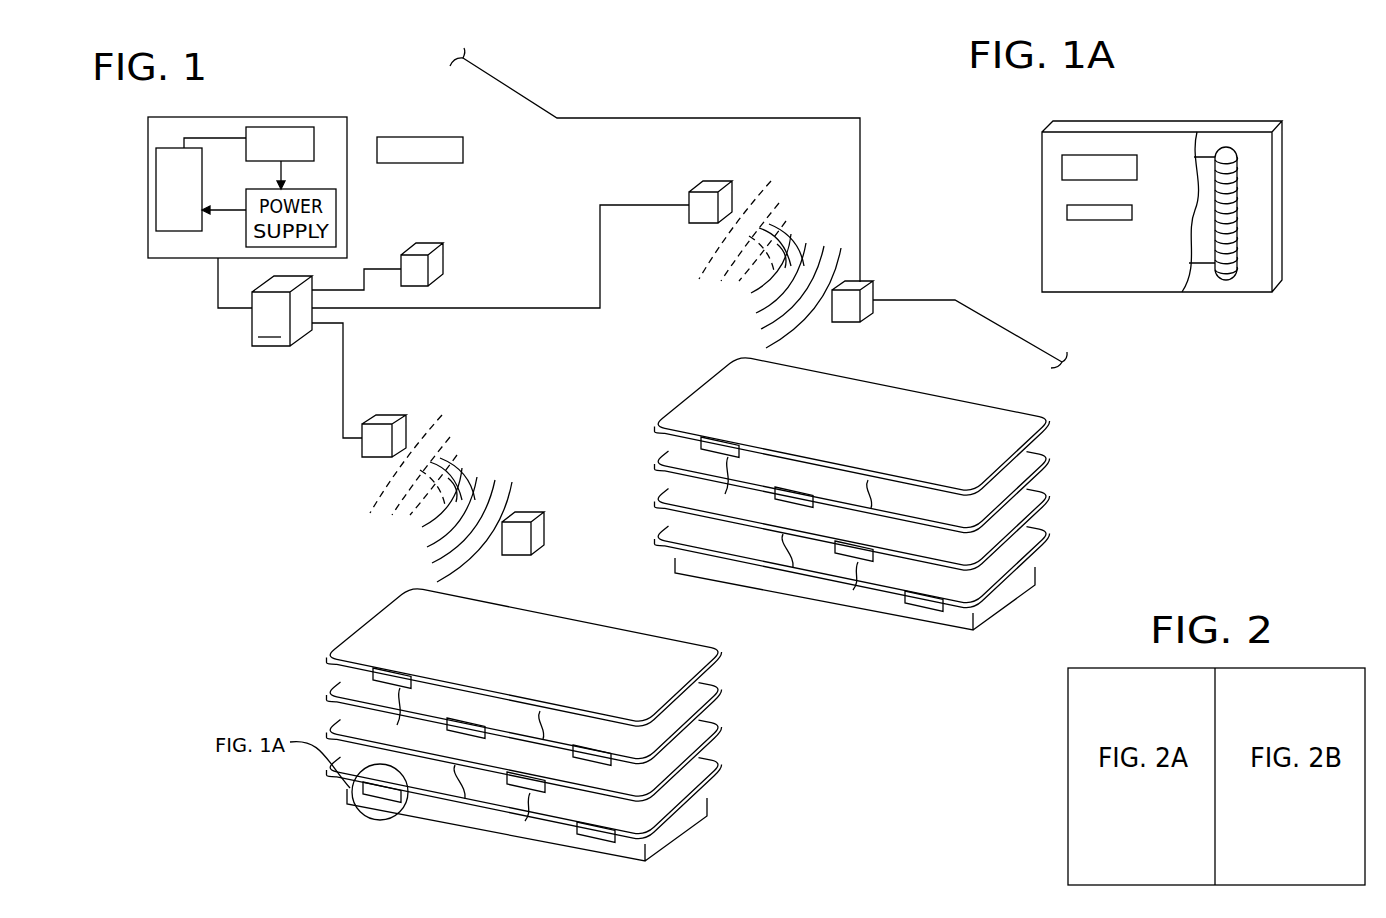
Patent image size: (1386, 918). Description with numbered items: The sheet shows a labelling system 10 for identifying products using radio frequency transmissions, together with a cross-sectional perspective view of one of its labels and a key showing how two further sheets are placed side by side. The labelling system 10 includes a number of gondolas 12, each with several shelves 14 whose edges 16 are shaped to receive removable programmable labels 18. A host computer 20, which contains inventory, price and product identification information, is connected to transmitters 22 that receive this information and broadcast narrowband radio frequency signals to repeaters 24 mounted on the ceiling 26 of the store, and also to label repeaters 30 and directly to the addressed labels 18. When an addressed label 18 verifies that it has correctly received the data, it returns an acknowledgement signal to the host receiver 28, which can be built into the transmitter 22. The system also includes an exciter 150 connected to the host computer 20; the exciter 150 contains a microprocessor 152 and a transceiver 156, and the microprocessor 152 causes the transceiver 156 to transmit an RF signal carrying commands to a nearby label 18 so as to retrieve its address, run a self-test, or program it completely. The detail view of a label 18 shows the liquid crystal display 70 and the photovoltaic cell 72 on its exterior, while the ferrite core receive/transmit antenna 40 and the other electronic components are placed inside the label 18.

In FIG. 1, the labelling system 10 is at (296, 535).
In FIG. 1, the gondola 12 is at (534, 654).
In FIG. 1, the shelf 14 is at (718, 663).
In FIG. 1, the shelf edge 16 is at (530, 705).
In FIG. 1, the programmable label 18 is at (464, 150).
In FIG. 1A, the programmable label 18 is at (1140, 121).
In FIG. 1, the host computer 20 is at (265, 302).
In FIG. 1, the transmitter 22 is at (717, 182).
In FIG. 1, the repeater 24 is at (870, 283).
In FIG. 1, the ceiling 26 is at (672, 118).
In FIG. 1, the receiver 28 is at (432, 244).
In FIG. 1, the label repeater 30 is at (395, 668).
In FIG. 1A, the radio frequency receive/transmit antenna 40 is at (1226, 146).
In FIG. 1A, the liquid crystal display 70 is at (1076, 160).
In FIG. 1A, the photovoltaic cell 72 is at (1090, 221).
In FIG. 1, the exciter 150 is at (193, 258).
In FIG. 1, the microprocessor 152 is at (148, 165).
In FIG. 1, the transceiver 156 is at (280, 127).